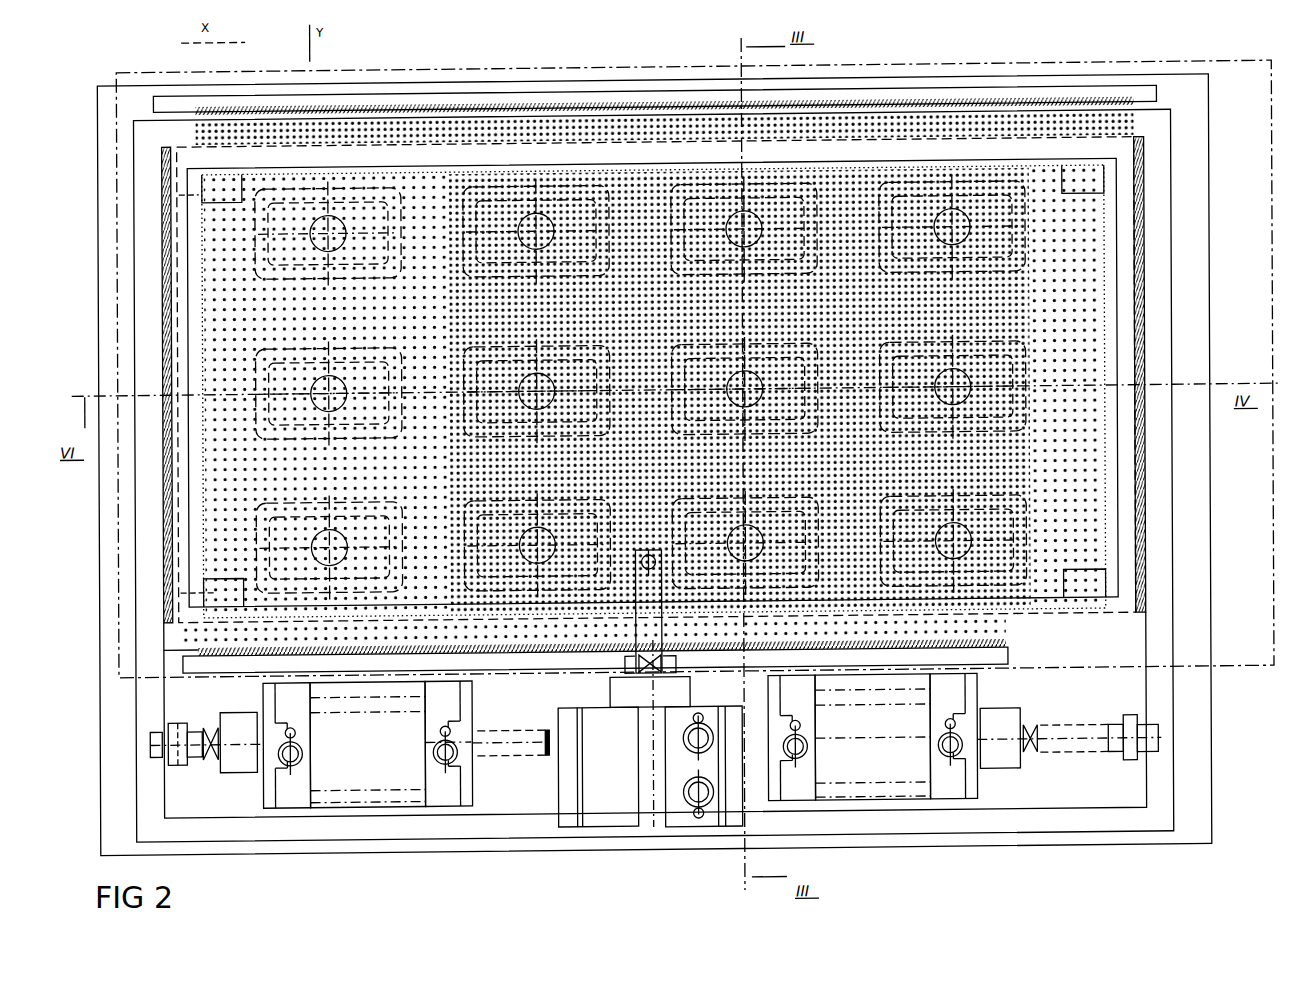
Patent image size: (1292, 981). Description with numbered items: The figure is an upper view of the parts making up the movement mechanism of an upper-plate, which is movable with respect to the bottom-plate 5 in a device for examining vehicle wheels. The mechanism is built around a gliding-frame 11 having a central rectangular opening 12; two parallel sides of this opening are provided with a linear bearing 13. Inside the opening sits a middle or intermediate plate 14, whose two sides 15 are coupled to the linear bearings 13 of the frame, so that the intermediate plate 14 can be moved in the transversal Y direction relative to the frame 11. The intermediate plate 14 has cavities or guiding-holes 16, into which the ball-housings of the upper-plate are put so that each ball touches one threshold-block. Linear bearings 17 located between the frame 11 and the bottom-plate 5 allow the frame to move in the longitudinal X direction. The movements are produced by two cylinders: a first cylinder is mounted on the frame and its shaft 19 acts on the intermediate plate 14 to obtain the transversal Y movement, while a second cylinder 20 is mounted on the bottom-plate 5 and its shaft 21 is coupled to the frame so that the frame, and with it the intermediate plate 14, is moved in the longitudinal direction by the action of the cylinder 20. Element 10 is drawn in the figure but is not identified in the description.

The bottom-plate 5 is at (1160, 728).
The drive unit 10 is at (570, 742).
The gliding-frame 11 is at (1130, 127).
The central rectangular opening 12 is at (1100, 157).
The linear bearing 13 is at (1148, 296).
The intermediate plate 14 is at (1088, 464).
The sides 15 is at (1147, 554).
The guiding-holes 16 is at (961, 228).
The linear bearings 17 is at (576, 114).
The shaft 19 is at (655, 673).
The second cylinder 20 is at (890, 746).
The shaft 21 is at (1046, 746).